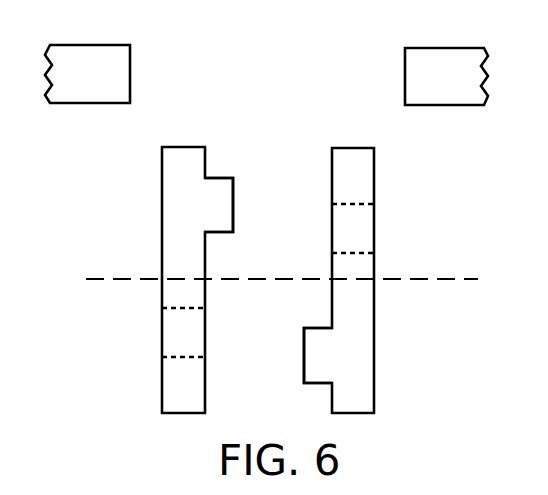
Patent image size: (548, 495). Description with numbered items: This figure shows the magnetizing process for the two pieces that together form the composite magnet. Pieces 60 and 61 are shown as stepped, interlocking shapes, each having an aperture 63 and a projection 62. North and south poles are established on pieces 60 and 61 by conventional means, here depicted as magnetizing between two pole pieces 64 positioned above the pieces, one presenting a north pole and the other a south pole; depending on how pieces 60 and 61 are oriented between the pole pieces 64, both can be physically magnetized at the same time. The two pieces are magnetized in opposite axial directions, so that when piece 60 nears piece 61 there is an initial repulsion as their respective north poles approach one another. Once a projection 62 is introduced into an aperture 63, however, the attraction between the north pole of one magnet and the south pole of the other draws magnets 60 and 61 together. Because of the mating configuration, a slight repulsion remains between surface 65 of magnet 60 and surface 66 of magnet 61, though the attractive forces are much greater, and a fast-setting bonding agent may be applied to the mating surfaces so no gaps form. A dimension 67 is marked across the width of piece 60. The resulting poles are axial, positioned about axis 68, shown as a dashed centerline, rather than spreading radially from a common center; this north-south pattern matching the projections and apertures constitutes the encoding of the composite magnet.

The piece 60 is at (160, 280).
The piece 61 is at (386, 268).
The projection 62 is at (215, 232).
The aperture 63 is at (205, 330).
The pole piece 64 is at (108, 45).
The surface 65 is at (205, 152).
The surface 66 is at (332, 158).
The magnet width 67 is at (228, 125).
The axis 68 is at (299, 284).